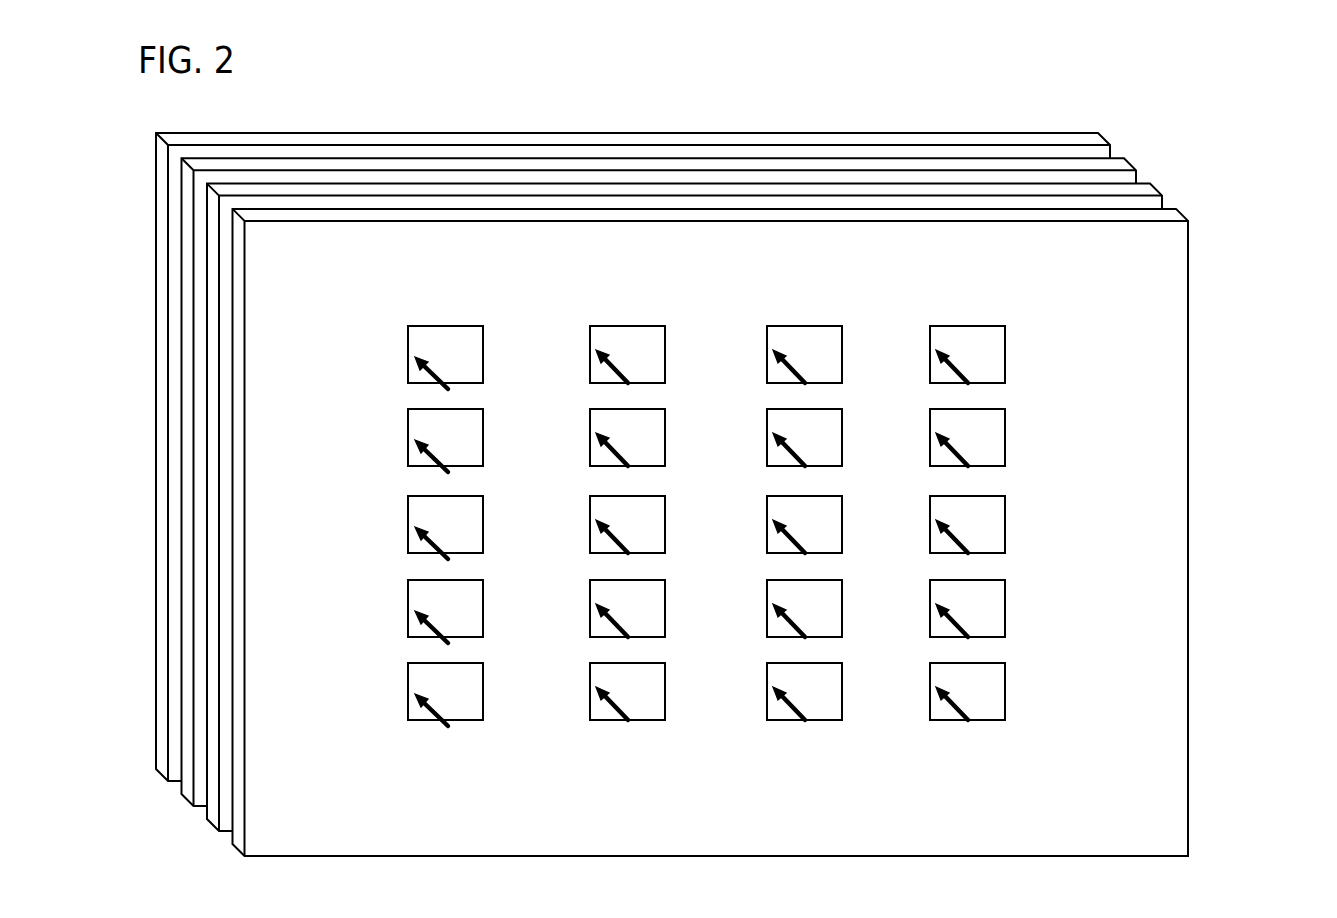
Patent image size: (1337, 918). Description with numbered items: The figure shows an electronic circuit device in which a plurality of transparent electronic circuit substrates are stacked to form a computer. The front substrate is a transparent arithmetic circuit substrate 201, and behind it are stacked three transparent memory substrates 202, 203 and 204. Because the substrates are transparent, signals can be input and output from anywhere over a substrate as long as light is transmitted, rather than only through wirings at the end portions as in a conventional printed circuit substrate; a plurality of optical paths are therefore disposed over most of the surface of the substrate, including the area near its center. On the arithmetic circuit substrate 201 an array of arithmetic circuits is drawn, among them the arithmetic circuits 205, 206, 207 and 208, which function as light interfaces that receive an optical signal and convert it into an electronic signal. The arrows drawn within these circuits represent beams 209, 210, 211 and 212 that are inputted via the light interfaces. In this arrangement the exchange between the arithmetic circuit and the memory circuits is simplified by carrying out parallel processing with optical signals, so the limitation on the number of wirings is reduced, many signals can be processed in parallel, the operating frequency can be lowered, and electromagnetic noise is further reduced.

The transparent arithmetic circuit substrate 201 is at (1176, 213).
The transparent memory substrate 202 is at (1151, 189).
The transparent memory substrate 203 is at (1125, 165).
The transparent memory substrate 204 is at (1099, 140).
The arithmetic circuit 205 is at (456, 342).
The arithmetic circuit 206 is at (475, 432).
The arithmetic circuit 207 is at (648, 338).
The arithmetic circuit 208 is at (652, 432).
The beam 209 is at (417, 358).
The beam 210 is at (417, 440).
The beam 211 is at (600, 375).
The beam 212 is at (594, 462).